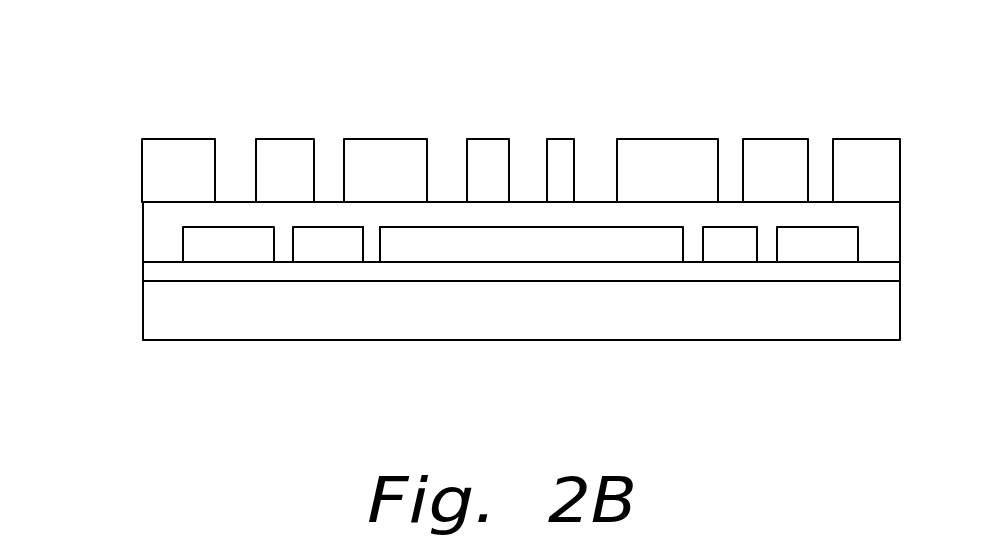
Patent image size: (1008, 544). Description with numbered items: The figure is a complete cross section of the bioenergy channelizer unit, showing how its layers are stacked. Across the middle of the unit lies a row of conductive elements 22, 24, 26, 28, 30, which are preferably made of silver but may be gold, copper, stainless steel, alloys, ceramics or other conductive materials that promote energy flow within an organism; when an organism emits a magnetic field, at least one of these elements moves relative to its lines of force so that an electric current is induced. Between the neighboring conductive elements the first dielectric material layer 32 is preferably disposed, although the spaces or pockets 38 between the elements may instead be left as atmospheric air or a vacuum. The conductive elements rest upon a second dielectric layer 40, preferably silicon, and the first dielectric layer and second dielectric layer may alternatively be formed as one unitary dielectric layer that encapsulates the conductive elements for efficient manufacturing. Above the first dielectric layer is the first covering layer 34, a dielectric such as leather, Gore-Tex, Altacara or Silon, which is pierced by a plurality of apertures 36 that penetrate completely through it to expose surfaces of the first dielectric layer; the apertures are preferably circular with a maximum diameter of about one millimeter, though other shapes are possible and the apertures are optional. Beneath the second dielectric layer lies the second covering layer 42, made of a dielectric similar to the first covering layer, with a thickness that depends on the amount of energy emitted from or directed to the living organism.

The conductive element 22 is at (197, 247).
The conductive element 24 is at (318, 240).
The conductive element 26 is at (518, 244).
The conductive element 28 is at (726, 241).
The conductive element 30 is at (818, 240).
The first dielectric material layer 32 is at (160, 215).
The first covering layer 34 is at (180, 157).
The apertures 36 is at (231, 160).
The spaces or pockets 38 is at (370, 248).
The second dielectric layer 40 is at (157, 273).
The second covering layer 42 is at (160, 312).